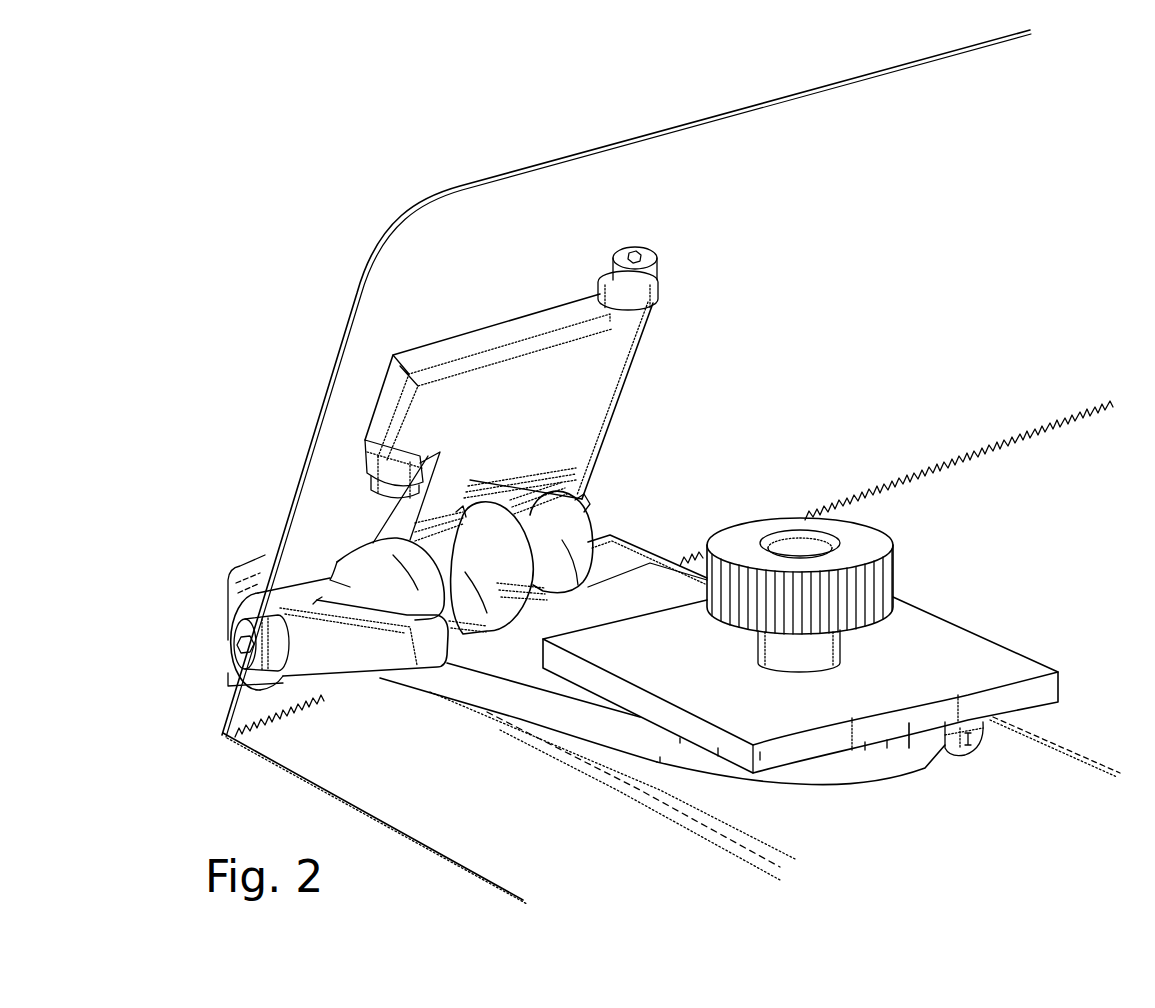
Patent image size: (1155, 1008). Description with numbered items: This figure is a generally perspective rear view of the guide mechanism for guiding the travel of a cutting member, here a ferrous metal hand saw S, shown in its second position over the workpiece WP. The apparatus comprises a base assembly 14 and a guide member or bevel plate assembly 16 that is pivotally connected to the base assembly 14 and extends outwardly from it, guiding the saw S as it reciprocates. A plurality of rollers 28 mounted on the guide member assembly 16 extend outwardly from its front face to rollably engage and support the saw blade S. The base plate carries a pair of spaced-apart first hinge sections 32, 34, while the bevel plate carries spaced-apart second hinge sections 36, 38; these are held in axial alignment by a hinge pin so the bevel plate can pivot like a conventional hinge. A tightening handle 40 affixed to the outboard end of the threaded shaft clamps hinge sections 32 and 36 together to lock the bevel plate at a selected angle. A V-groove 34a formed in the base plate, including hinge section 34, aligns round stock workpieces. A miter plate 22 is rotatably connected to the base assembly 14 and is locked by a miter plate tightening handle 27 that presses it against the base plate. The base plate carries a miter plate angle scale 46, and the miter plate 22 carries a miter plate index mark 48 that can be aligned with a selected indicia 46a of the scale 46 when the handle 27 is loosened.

The saw blade S is at (483, 212).
The workpiece WP is at (345, 748).
The base assembly 14 is at (507, 653).
The guide member assembly 16 is at (427, 410).
The miter plate 22 is at (917, 627).
The miter plate tightening handle 27 is at (868, 545).
The rollers 28 is at (657, 295).
The first hinge section 32 is at (377, 540).
The first hinge section 34 is at (527, 585).
The V-groove 34a is at (945, 762).
The second hinge section 36 is at (490, 622).
The second hinge section 38 is at (584, 588).
The tightening handle 40 is at (328, 647).
The miter plate angle scale 46 is at (660, 757).
The indicia 46a is at (913, 742).
The miter plate index mark 48 is at (920, 727).